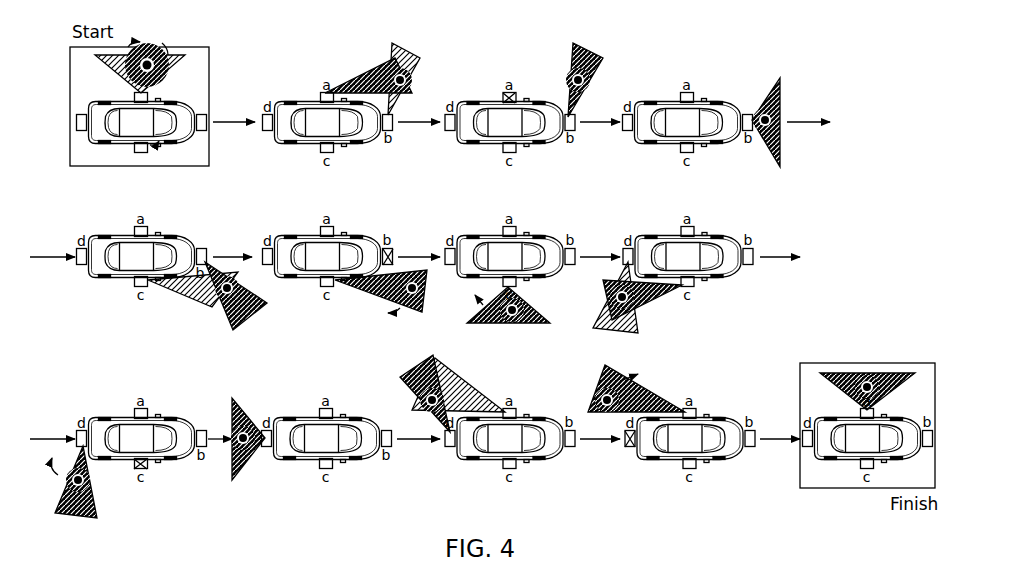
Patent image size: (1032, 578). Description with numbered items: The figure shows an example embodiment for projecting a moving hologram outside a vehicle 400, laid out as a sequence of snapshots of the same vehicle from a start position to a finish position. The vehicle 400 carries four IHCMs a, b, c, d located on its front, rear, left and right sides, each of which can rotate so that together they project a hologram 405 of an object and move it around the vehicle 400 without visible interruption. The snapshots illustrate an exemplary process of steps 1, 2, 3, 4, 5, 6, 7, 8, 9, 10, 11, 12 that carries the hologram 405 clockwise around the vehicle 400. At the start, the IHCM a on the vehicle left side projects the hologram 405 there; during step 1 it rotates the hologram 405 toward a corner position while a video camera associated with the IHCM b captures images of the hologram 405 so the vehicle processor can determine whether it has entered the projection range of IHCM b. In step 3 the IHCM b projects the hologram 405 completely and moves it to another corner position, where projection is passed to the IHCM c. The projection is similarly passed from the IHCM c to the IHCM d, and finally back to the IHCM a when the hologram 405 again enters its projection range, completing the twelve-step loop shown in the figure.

The vehicle 400 is at (105, 100).
The hologram 405 is at (162, 43).
The IHCM a is at (141, 90).
The IHCM b is at (202, 114).
The IHCM c is at (141, 156).
The IHCM d is at (82, 115).
The step 1 is at (234, 113).
The step 2 is at (419, 113).
The step 3 is at (600, 113).
The step 4 is at (430, 181).
The step 5 is at (232, 248).
The step 6 is at (419, 248).
The step 7 is at (600, 248).
The step 8 is at (415, 339).
The step 9 is at (220, 430).
The step 10 is at (418, 430).
The step 11 is at (600, 430).
The step 12 is at (780, 430).